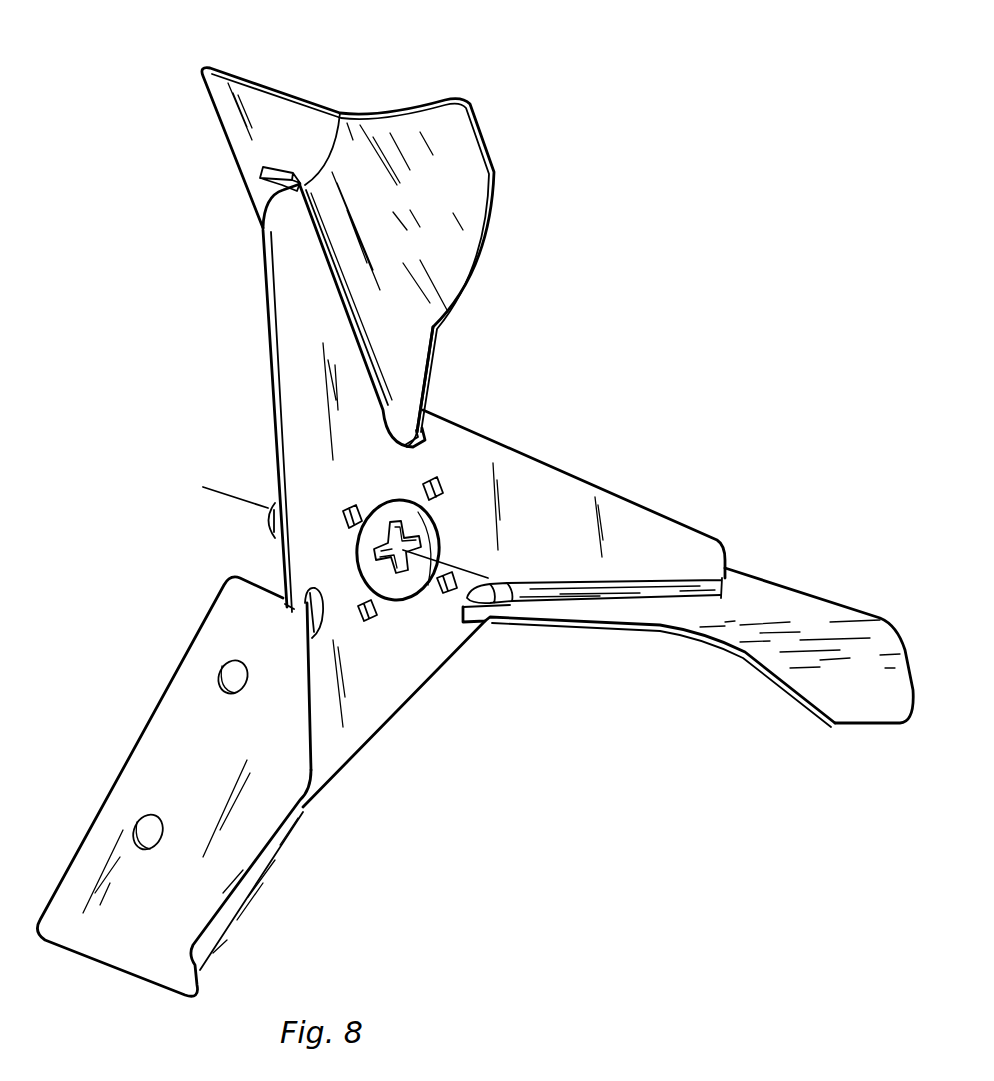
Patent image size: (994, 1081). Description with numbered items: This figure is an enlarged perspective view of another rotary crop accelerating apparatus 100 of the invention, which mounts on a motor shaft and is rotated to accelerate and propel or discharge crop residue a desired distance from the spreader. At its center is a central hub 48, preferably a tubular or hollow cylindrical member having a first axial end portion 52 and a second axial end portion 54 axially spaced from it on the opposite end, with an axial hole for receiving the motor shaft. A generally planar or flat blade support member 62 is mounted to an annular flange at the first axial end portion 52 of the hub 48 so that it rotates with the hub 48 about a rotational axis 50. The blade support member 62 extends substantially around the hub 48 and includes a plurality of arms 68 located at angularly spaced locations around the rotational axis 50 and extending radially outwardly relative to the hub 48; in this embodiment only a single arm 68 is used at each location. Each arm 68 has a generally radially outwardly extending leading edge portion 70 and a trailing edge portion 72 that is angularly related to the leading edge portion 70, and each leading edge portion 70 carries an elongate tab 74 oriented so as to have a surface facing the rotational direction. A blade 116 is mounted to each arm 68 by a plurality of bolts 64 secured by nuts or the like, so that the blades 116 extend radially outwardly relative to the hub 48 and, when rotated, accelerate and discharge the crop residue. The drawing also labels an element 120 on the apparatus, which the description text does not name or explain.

The central hub 48 is at (447, 518).
The rotational axis 50 is at (227, 493).
The first axial end portion 52 is at (423, 537).
The second axial end portion 54 is at (270, 533).
The blade support member 62 is at (684, 514).
The bolts 64 is at (233, 660).
The arms 68 is at (267, 317).
The leading edge portion 70 is at (340, 118).
The trailing edge portion 72 is at (267, 352).
The elongate tab 74 is at (283, 172).
The rotary crop accelerating apparatus 100 is at (668, 808).
The blade 116 is at (290, 84).
The bent edge 120 is at (437, 368).